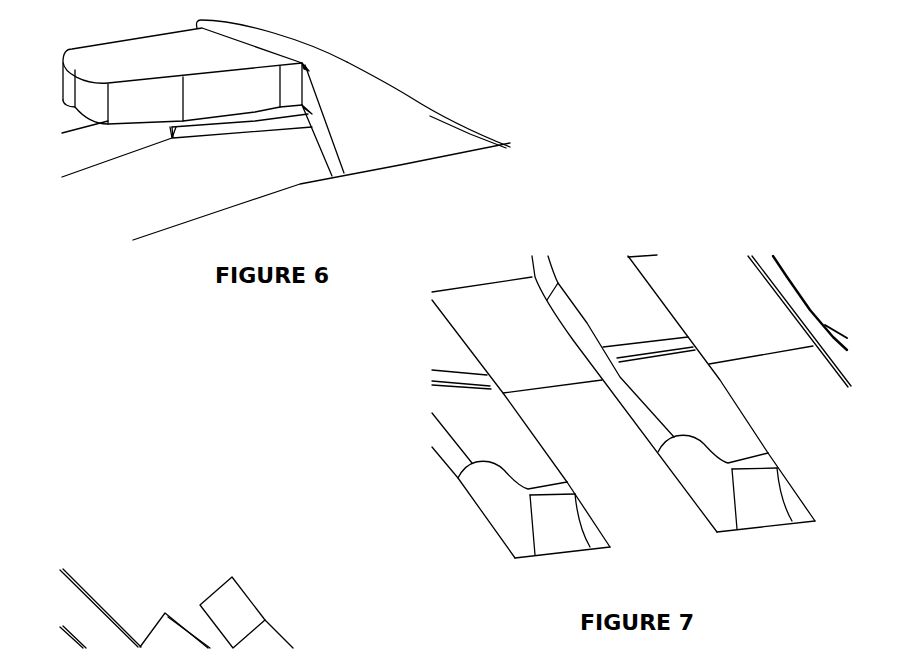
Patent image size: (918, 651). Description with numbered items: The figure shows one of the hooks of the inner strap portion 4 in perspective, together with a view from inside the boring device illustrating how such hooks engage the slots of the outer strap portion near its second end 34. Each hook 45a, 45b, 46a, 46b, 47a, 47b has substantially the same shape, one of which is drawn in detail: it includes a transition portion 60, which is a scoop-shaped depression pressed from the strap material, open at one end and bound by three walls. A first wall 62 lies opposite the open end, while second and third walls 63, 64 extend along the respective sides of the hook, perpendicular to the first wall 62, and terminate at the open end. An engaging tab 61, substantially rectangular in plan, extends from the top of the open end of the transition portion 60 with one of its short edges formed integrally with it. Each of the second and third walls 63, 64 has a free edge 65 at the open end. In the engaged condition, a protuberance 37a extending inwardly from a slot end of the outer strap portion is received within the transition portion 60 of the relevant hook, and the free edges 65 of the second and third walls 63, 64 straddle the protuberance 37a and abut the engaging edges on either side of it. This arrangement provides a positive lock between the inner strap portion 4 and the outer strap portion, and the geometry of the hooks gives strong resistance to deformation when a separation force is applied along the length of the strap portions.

In FIG. 6, the inner strap portion 4 is at (369, 213).
In FIG. 7, the second end 34 is at (146, 600).
In FIG. 7, the protuberance 37a is at (556, 481).
In FIG. 6, the hook 45a is at (531, 82).
In FIG. 6, the hook 45b is at (712, 39).
In FIG. 6, the hook 46a is at (765, 39).
In FIG. 6, the hook 46b is at (661, 84).
In FIG. 6, the hook 47a is at (714, 84).
In FIG. 6, the hook 47b is at (765, 84).
In FIG. 6, the transition portion 60 is at (459, 167).
In FIG. 6, the engaging tab 61 is at (135, 104).
In FIG. 6, the first wall 62 is at (410, 97).
In FIG. 7, the first wall 62 is at (566, 535).
In FIG. 6, the second wall 63 is at (383, 132).
In FIG. 6, the third wall 64 is at (218, 125).
In FIG. 7, the third wall 64 is at (515, 507).
In FIG. 6, the free edge 65 is at (170, 128).